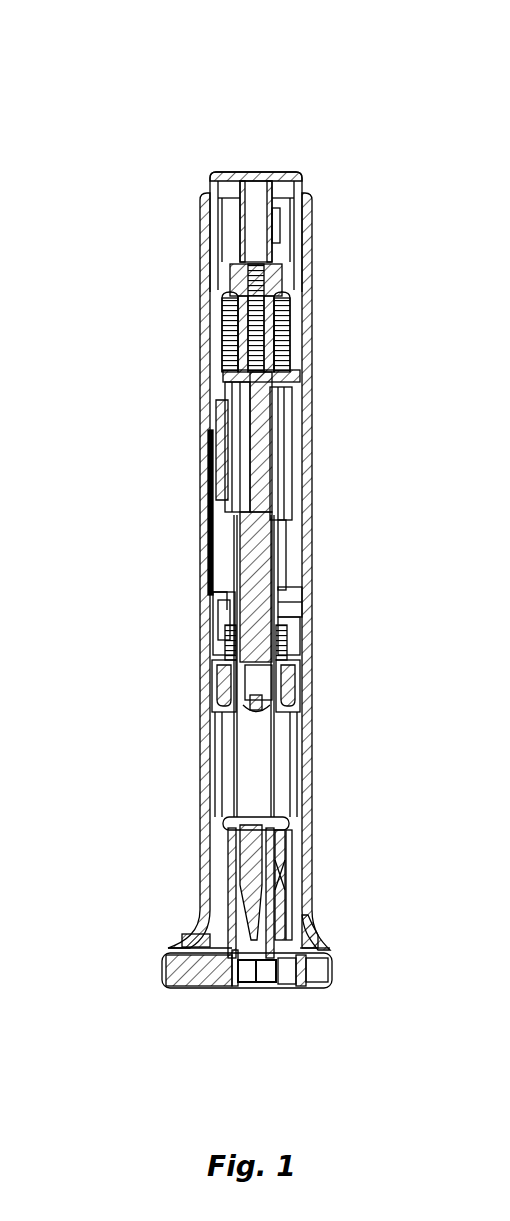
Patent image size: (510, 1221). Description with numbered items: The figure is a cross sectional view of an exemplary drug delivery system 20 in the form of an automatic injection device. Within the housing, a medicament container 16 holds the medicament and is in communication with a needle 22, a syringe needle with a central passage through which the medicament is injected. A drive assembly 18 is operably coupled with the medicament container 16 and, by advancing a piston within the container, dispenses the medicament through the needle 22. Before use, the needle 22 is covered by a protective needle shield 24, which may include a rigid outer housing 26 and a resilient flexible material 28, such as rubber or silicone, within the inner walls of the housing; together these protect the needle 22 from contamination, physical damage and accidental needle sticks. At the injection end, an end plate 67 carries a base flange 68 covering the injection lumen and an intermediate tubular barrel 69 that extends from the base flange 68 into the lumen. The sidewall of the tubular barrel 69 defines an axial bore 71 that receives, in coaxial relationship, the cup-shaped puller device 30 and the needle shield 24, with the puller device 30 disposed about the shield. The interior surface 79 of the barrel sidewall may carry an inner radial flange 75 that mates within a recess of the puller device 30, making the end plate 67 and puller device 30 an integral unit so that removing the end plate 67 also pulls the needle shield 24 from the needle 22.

The drug delivery system 20 is at (99, 116).
The drive assembly 18 is at (248, 548).
The medicament container 16 is at (248, 762).
The needle 22 is at (246, 912).
The axial bore 71 is at (311, 808).
The interior surface 79 is at (288, 855).
The intermediate tubular barrel 69 is at (286, 888).
The resilient flexible material 28 is at (265, 942).
The base flange 68 is at (330, 972).
The end plate 67 is at (180, 975).
The protective shield puller device 30 is at (238, 982).
The needle shield 24 is at (257, 985).
The rigid outer housing 26 is at (266, 985).
The inner radial flange 75 is at (285, 983).